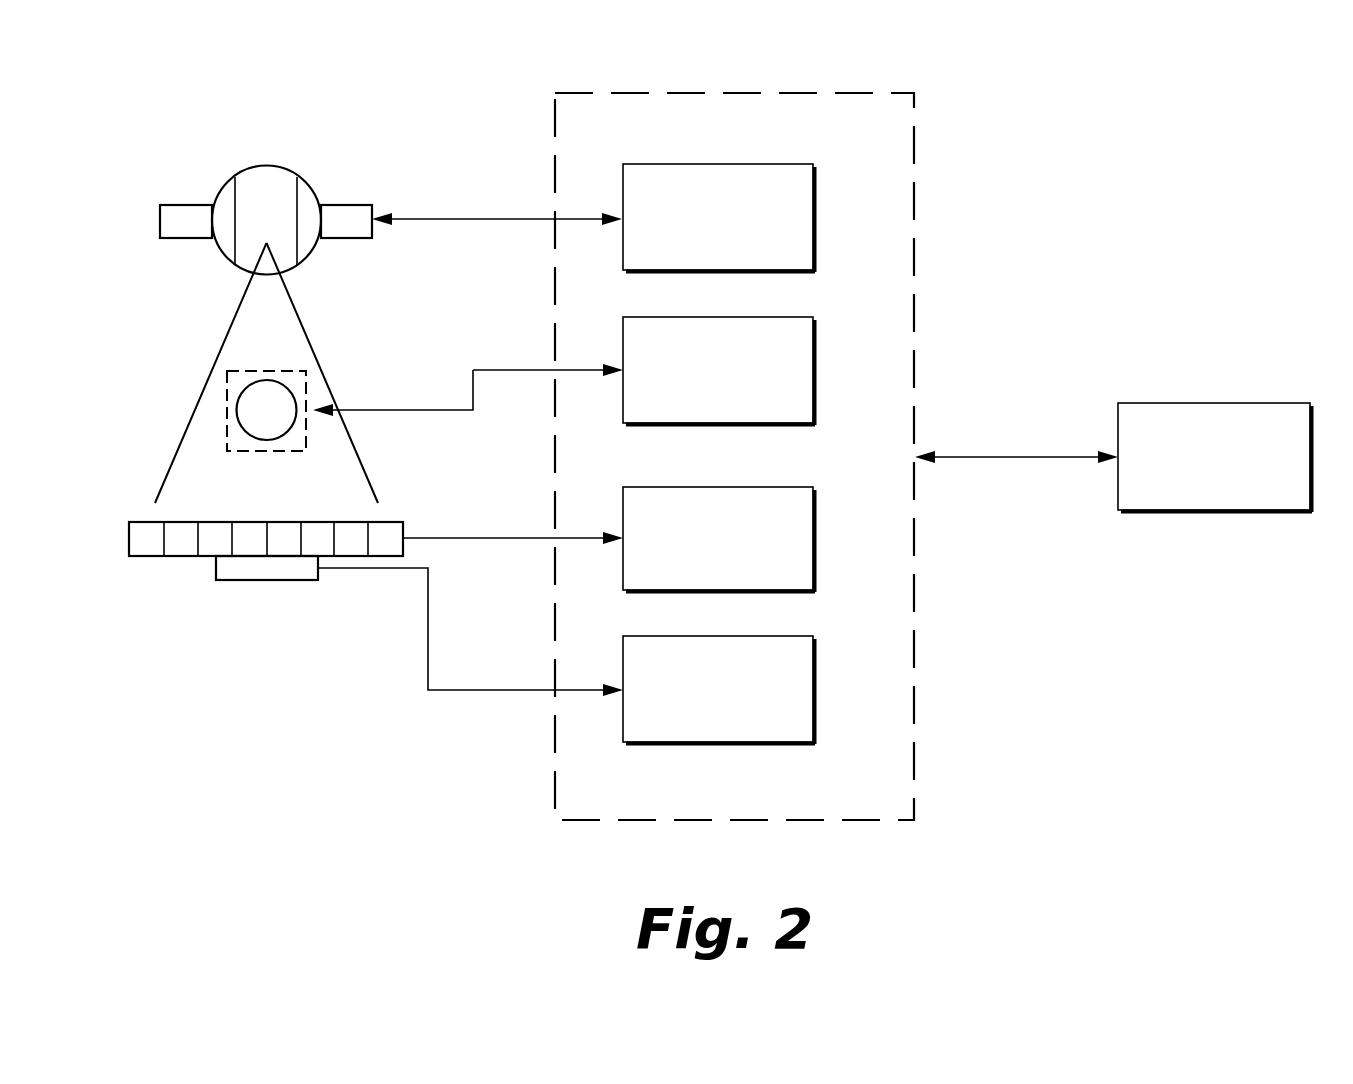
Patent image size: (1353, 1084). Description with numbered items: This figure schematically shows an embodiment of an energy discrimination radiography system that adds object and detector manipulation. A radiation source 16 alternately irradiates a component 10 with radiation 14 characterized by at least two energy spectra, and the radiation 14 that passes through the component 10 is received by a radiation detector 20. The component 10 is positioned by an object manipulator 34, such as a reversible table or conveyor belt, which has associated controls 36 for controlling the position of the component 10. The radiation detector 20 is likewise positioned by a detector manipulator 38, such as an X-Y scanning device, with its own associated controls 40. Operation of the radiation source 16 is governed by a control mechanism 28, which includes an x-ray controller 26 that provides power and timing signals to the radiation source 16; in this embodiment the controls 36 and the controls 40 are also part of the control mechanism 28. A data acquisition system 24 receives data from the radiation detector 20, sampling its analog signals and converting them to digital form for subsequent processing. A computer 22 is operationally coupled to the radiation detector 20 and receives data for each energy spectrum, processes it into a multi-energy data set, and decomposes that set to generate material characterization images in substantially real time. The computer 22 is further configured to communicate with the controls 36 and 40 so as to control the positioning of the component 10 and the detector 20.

The component 10 is at (262, 412).
The radiation 14 is at (160, 483).
The radiation source 16 is at (275, 165).
The radiation detector 20 is at (155, 557).
The computer 22 is at (1250, 403).
The data acquisition system 24 is at (623, 563).
The x-ray controller 26 is at (773, 164).
The control mechanism 28 is at (917, 745).
The object manipulator 34 is at (233, 440).
The controls 36 is at (815, 380).
The detector manipulator 38 is at (250, 570).
The controls 40 is at (815, 670).